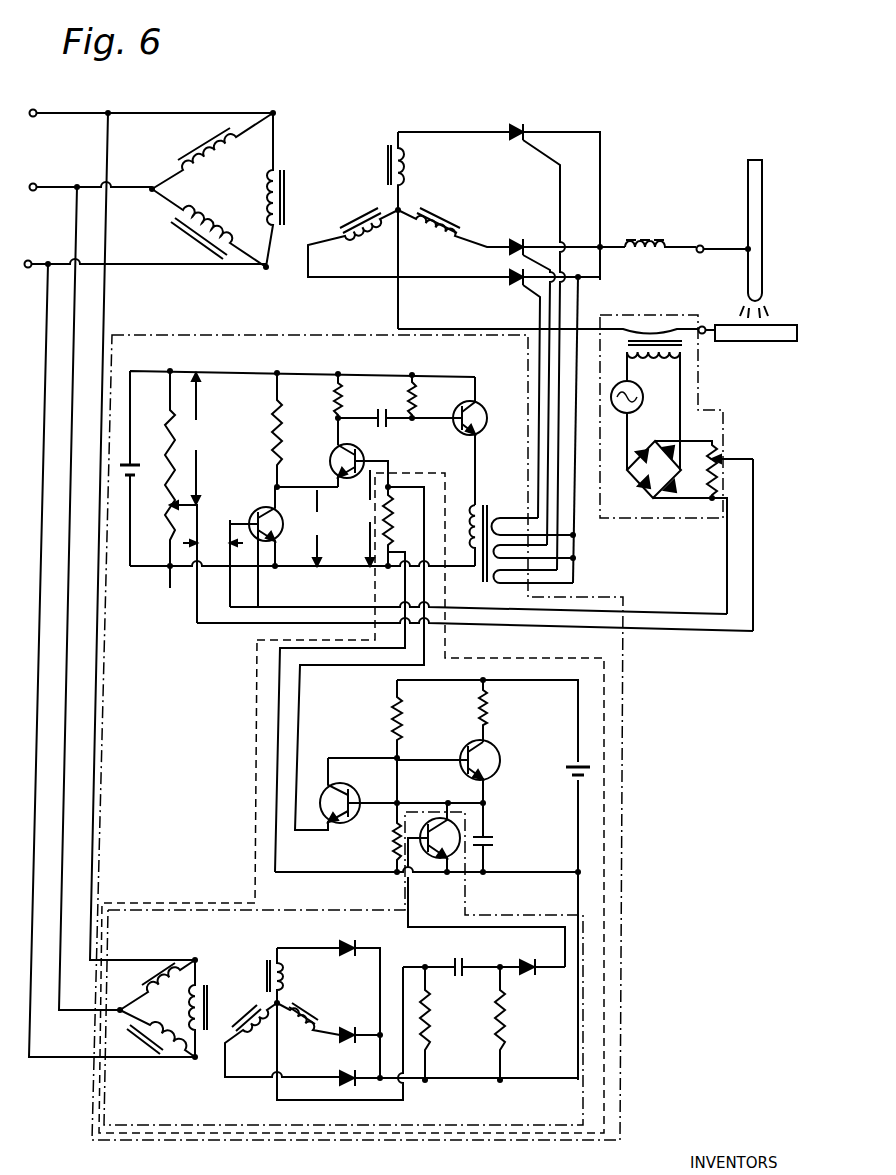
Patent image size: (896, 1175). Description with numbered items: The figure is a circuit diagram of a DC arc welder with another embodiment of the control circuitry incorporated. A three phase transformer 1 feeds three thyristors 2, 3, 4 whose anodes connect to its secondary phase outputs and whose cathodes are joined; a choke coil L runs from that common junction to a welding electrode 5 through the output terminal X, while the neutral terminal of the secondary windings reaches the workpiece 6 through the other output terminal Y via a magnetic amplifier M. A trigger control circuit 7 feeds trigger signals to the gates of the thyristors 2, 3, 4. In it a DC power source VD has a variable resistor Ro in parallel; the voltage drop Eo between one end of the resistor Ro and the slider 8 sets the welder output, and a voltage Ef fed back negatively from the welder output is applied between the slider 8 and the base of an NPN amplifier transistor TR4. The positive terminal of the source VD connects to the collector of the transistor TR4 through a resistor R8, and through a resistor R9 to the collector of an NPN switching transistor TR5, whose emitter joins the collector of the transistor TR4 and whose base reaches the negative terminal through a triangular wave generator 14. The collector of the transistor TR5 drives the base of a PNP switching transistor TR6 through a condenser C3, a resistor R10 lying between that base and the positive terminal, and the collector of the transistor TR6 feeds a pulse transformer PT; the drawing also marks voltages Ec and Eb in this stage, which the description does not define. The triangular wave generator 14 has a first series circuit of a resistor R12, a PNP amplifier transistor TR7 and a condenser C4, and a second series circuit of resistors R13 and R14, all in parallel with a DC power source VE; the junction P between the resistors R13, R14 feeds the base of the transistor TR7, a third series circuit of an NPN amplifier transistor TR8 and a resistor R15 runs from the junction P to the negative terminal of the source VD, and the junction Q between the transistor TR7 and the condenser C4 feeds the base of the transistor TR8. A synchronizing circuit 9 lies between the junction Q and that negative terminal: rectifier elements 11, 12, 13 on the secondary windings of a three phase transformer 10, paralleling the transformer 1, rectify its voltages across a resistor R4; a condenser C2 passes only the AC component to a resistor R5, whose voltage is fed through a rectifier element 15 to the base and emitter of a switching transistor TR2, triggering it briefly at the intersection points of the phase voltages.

The three phase transformer 1 is at (346, 153).
The thyristor 2 is at (522, 126).
The thyristor 3 is at (522, 241).
The thyristor 4 is at (512, 273).
The welding electrode 5 is at (763, 233).
The workpiece 6 is at (785, 323).
The trigger control circuit 7 is at (330, 334).
The slider 8 is at (183, 562).
The synchronizing circuit 9 is at (370, 915).
The three phase transformer 10 is at (204, 946).
The rectifier element 11 is at (352, 956).
The rectifier element 12 is at (350, 1033).
The rectifier element 13 is at (340, 1077).
The triangular wave generator 14 is at (512, 657).
The rectifier element 15 is at (529, 972).
The choke coil L is at (652, 242).
The output terminal X is at (703, 245).
The output terminal Y is at (703, 326).
The magnetic amplifier M is at (676, 473).
The pulse transformer PT is at (492, 503).
The switching transistor TR2 is at (440, 873).
The amplifier transistor TR4 is at (255, 512).
The switching transistor TR5 is at (364, 459).
The switching transistor TR6 is at (498, 398).
The amplifier transistor TR7 is at (500, 763).
The amplifier transistor TR8 is at (342, 782).
The resistor R4 is at (428, 1045).
The resistor R5 is at (503, 1045).
The resistor R8 is at (274, 440).
The resistor R9 is at (335, 397).
The resistor R10 is at (417, 408).
The resistor R12 is at (490, 706).
The resistor R13 is at (393, 722).
The resistor R14 is at (393, 832).
The resistor R15 is at (392, 532).
The variable resistor Ro is at (168, 460).
The condenser C2 is at (464, 962).
The condenser C3 is at (385, 408).
The condenser C4 is at (497, 841).
The DC power source VD is at (138, 478).
The DC power source VE is at (570, 777).
The voltage drop Eo is at (195, 438).
The feedback voltage Ef is at (213, 544).
The voltage Ec is at (313, 528).
The voltage Eb is at (360, 518).
The junction P is at (395, 763).
The junction Q is at (478, 799).